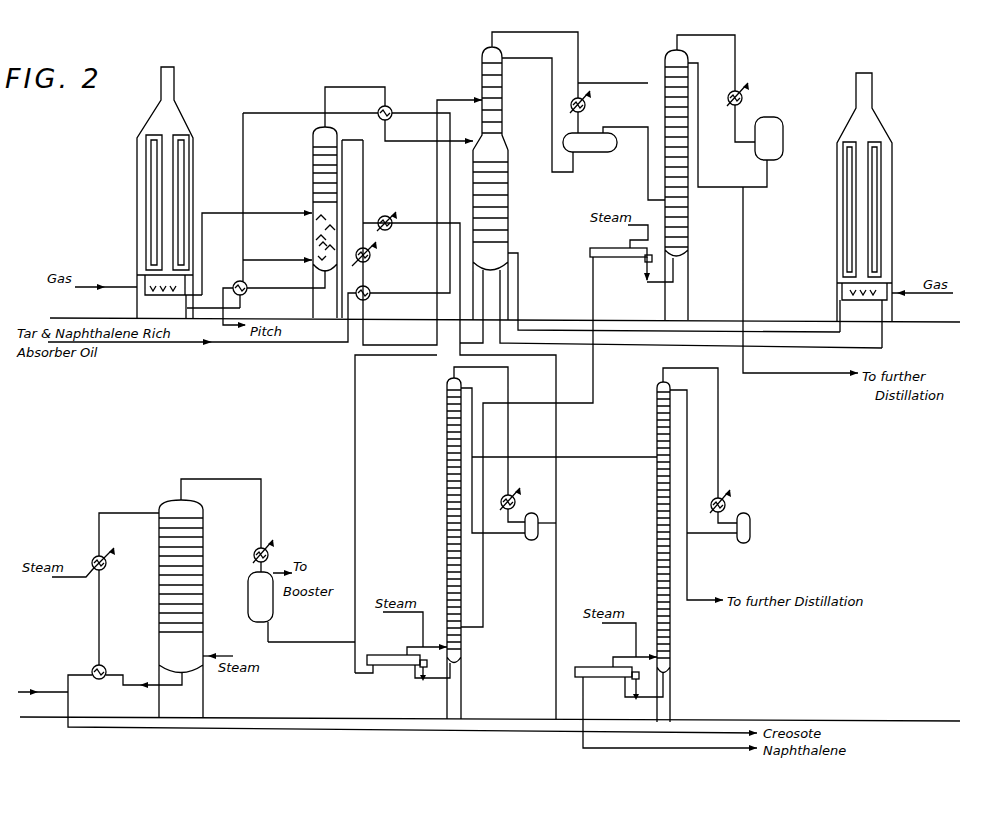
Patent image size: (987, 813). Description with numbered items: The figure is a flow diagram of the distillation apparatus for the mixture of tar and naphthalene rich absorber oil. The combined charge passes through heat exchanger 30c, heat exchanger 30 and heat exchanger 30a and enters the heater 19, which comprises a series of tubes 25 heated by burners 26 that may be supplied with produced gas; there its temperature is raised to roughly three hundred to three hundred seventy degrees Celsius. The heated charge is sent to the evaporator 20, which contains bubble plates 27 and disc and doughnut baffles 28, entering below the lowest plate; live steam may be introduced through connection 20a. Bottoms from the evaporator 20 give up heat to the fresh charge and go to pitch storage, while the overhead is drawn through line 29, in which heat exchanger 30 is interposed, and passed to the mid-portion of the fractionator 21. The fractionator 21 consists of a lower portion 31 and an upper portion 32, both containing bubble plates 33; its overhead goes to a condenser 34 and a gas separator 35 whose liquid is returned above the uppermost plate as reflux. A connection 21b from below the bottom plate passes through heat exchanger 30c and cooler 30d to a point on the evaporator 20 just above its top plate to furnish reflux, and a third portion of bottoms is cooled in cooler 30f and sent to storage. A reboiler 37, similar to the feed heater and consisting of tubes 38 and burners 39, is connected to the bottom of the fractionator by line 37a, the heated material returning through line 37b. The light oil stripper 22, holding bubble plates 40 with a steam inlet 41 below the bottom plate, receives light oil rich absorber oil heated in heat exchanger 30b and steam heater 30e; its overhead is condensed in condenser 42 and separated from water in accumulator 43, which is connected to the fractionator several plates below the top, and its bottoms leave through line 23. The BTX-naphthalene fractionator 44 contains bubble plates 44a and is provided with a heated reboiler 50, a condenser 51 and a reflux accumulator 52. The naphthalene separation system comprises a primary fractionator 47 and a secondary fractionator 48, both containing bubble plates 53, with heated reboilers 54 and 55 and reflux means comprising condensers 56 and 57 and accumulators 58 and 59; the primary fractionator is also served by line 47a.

The heater 19 is at (176, 86).
The tubes 25 is at (141, 220).
The burners 26 is at (160, 287).
The evaporator 20 is at (312, 150).
The bubble plates 27 is at (316, 185).
The disc and doughnut baffles 28 is at (315, 232).
The connection 20a is at (277, 251).
The line 29 is at (338, 86).
The heat exchanger 30 is at (391, 107).
The connection 21b is at (364, 172).
The cooler 30f is at (389, 215).
The cooler 30d is at (371, 253).
The heat exchanger 30c is at (371, 290).
The heat exchanger 30a is at (246, 293).
The upper portion 32 is at (482, 50).
The bubble plates 33 is at (480, 75).
The fractionator 21 is at (508, 178).
The lower portion 31 is at (509, 203).
The condenser 34 is at (586, 104).
The gas separator 35 is at (590, 153).
The BTX-naphthalene fractionator 44 is at (666, 58).
The bubble plates 44a is at (694, 205).
The condenser 51 is at (744, 100).
The reflux accumulator 52 is at (783, 125).
The reboiler 37 is at (873, 89).
The tubes 38 is at (893, 182).
The burners 39 is at (865, 286).
The line 37b is at (808, 331).
The line 37a is at (745, 348).
The light oil stripper 22 is at (176, 502).
The bubble plates 40 is at (197, 545).
The steam inlet 41 is at (220, 656).
The condenser 42 is at (267, 548).
The accumulator 43 is at (248, 588).
The bottoms line 23 is at (280, 642).
The steam heater 30e is at (106, 569).
The heat exchanger 30b is at (104, 666).
The primary fractionator 47 is at (446, 441).
The recycle line 47a is at (353, 406).
The bubble plates 53 is at (446, 566).
The heated reboiler 54 is at (392, 658).
The heated reboiler 55 is at (600, 667).
The condenser 56 is at (520, 495).
The condenser 57 is at (731, 493).
The accumulator 58 is at (540, 523).
The accumulator 59 is at (751, 519).
The secondary fractionator 48 is at (657, 429).
The heated reboiler 50 is at (600, 248).